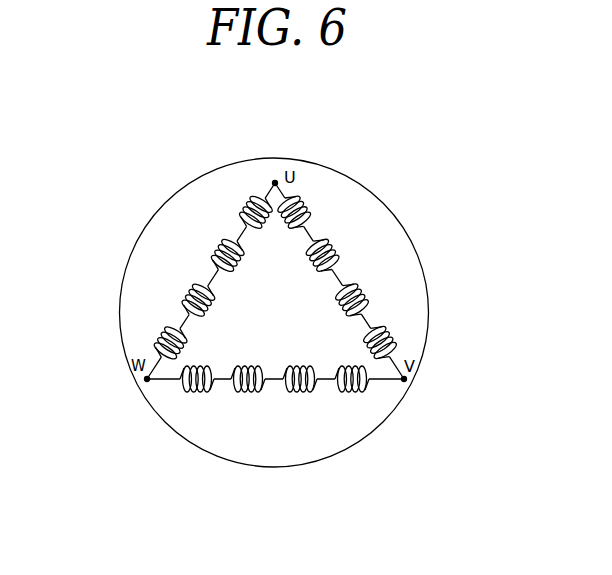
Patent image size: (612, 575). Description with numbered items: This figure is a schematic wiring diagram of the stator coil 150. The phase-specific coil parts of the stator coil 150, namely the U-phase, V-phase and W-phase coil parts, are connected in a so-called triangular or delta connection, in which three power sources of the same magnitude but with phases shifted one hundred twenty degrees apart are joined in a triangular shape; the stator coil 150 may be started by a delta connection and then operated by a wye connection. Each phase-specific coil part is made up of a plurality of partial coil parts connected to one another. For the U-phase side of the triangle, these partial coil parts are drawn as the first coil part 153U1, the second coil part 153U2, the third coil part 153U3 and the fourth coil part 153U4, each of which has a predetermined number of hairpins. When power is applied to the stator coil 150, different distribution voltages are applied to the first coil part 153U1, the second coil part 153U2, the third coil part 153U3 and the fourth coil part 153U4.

The stator coil 150 is at (128, 222).
The first coil part 153U1 is at (304, 208).
The second coil part 153U2 is at (336, 250).
The third coil part 153U3 is at (363, 297).
The fourth coil part 153U4 is at (392, 340).